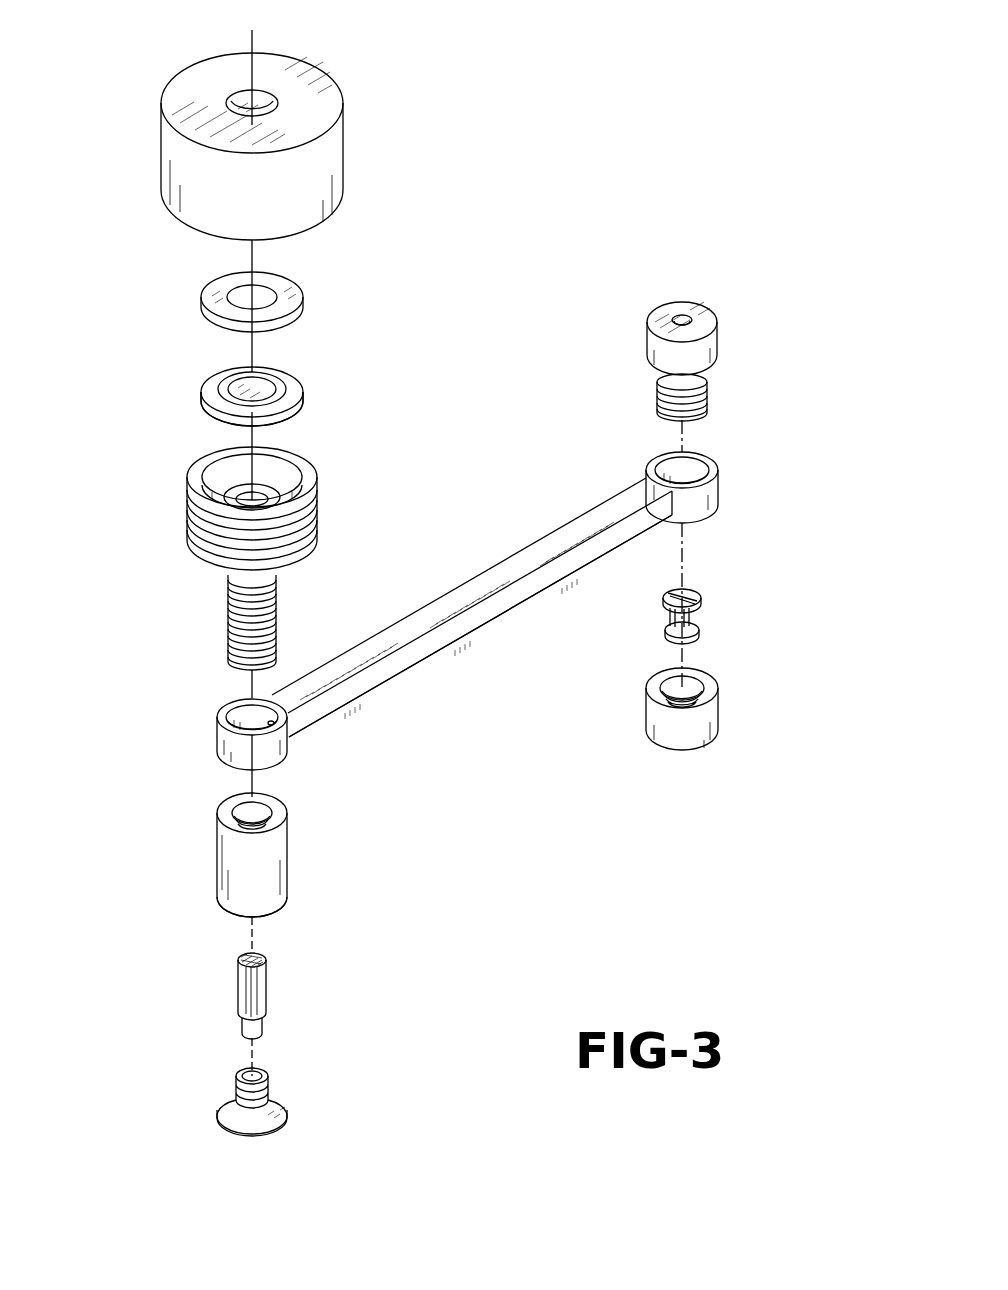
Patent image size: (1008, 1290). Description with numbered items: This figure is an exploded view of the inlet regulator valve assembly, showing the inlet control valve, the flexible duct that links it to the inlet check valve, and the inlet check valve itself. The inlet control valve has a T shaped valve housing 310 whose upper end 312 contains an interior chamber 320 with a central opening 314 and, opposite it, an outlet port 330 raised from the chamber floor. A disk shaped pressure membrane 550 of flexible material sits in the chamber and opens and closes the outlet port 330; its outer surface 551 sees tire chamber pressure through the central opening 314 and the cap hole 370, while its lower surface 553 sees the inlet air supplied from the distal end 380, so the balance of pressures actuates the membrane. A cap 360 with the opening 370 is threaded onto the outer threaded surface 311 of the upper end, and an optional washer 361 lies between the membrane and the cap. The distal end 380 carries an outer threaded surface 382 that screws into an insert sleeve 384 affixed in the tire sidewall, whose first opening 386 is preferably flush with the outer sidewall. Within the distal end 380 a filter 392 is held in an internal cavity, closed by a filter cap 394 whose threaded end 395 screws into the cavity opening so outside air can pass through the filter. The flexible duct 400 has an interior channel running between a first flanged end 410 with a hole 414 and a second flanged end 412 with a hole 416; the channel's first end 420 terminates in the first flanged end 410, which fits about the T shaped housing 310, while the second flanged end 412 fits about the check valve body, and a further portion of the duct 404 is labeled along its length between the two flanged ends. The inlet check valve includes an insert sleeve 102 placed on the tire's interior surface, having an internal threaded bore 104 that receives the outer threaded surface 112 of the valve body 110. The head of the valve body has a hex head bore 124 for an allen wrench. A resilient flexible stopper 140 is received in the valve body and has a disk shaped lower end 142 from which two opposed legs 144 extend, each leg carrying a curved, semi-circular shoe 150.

The insert sleeve 102 is at (716, 716).
The internal threaded bore 104 is at (666, 689).
The valve body 110 is at (726, 334).
The outer threaded surface 112 is at (708, 404).
The hex head bore 124 is at (680, 318).
The flexible stopper 140 is at (699, 580).
The disk shaped lower end 142 is at (698, 643).
The legs 144 is at (667, 630).
The shoe 150 is at (668, 598).
The valve housing 310 is at (168, 545).
The outer threaded surface 311 is at (290, 536).
The upper end 312 is at (307, 493).
The central opening 314 is at (236, 464).
The interior chamber 320 is at (276, 482).
The outlet port 330 is at (246, 501).
The cap 360 is at (346, 157).
The washer 361 is at (296, 284).
The cap hole 370 is at (238, 101).
The distal end 380 is at (229, 656).
The outer threaded surface 382 is at (231, 620).
The insert sleeve 384 is at (290, 862).
The first opening 386 is at (232, 914).
The filter 392 is at (269, 988).
The filter cap 394 is at (268, 1129).
The threaded end 395 is at (272, 1085).
The flexible duct 400 is at (471, 580).
The lower edge of link arm 404 is at (426, 648).
The first flanged end 410 is at (217, 739).
The second flanged end 412 is at (723, 490).
The hole 414 is at (244, 720).
The hole 416 is at (672, 470).
The first end 420 is at (269, 721).
The pressure membrane 550 is at (300, 380).
The outer surface 551 is at (232, 378).
The lower surface 553 is at (286, 420).